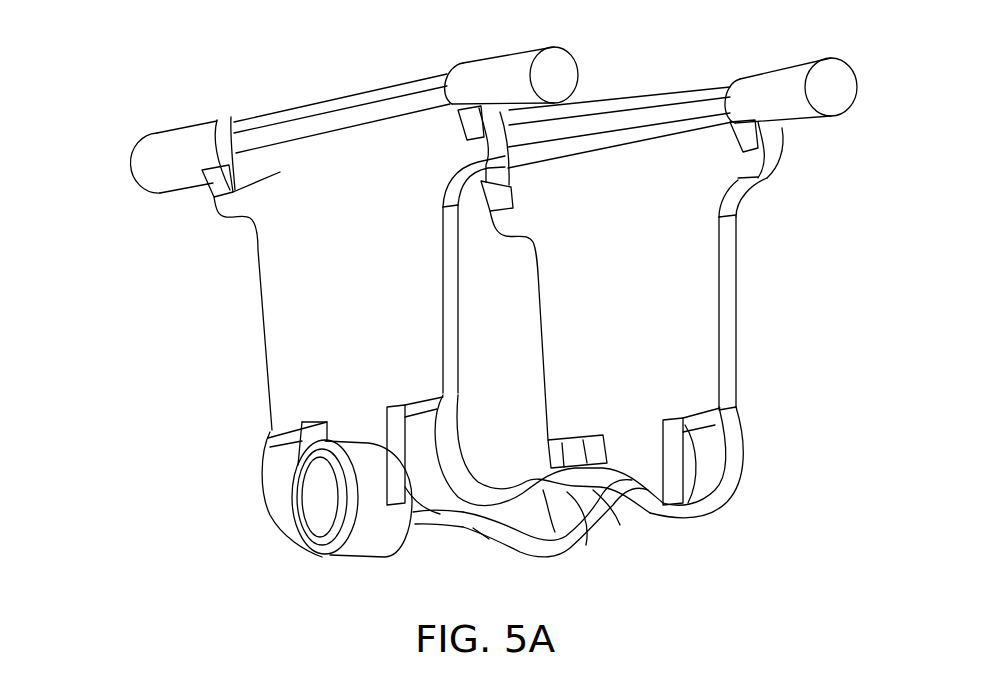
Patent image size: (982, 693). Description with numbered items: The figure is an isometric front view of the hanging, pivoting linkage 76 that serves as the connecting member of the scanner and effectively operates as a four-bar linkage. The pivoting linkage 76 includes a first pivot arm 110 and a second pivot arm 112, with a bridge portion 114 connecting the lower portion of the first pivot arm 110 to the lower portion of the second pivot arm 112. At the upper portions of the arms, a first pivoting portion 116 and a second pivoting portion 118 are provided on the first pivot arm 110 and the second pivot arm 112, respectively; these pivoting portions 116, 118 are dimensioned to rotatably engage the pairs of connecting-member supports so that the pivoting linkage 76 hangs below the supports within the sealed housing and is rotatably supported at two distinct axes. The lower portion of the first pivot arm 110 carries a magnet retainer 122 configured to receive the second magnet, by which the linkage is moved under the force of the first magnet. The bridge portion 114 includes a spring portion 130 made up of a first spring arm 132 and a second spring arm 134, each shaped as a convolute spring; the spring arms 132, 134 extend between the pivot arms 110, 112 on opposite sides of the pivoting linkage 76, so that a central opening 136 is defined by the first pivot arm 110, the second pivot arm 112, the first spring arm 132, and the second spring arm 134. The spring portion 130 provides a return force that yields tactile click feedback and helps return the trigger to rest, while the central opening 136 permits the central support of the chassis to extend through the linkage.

The pivoting linkage 76 is at (146, 74).
The first pivot arm 110 is at (290, 288).
The second pivot arm 112 is at (727, 296).
The bridge portion 114 is at (470, 570).
The first pivoting portion 116 is at (347, 96).
The second pivoting portion 118 is at (620, 110).
The magnet retainer 122 is at (318, 548).
The spring portion 130 is at (566, 458).
The first spring arm 132 is at (730, 505).
The second spring arm 134 is at (550, 556).
The central opening 136 is at (566, 520).